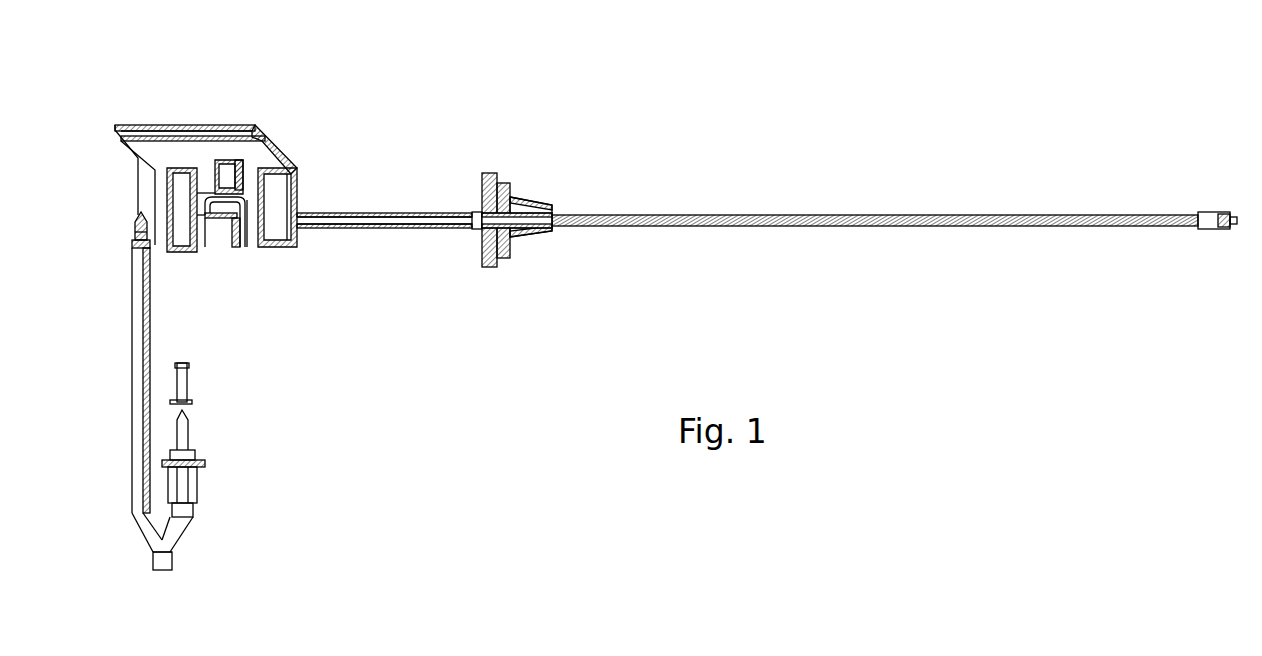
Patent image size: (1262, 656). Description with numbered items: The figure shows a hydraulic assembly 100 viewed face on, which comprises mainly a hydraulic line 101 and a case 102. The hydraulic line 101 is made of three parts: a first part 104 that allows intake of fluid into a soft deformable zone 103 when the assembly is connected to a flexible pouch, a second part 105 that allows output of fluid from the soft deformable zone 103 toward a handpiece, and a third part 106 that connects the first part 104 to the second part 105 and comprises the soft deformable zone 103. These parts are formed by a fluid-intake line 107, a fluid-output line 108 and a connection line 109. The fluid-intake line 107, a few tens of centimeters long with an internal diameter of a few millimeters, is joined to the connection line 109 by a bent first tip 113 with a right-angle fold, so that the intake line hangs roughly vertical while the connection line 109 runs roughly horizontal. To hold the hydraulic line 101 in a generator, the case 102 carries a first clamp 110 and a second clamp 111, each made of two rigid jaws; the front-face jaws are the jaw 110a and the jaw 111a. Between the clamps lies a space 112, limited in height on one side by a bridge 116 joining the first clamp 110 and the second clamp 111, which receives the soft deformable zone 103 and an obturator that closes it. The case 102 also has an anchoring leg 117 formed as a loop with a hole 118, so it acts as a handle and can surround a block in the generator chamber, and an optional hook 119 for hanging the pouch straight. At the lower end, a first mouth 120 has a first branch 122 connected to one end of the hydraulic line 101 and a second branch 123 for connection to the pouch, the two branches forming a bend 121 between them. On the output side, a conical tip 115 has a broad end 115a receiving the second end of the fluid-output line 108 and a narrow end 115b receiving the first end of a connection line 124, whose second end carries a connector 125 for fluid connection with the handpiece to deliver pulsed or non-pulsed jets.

The hydraulic assembly 100 is at (410, 442).
The hydraulic line 101 is at (413, 203).
The case 102 is at (240, 138).
The soft deformable zone 103 is at (233, 253).
The first part 104 is at (131, 357).
The second part 105 is at (358, 230).
The third part 106 is at (199, 215).
The fluid-intake line 107 is at (143, 405).
The fluid-output line 108 is at (330, 213).
The connection line 109 is at (244, 190).
The first clamp 110 is at (183, 253).
The jaw 110a is at (197, 243).
The second clamp 111 is at (282, 256).
The jaw 111a is at (287, 257).
The space 112 is at (222, 258).
The first tip 113 is at (135, 227).
The conical tip 115 is at (530, 198).
The broad end 115a is at (480, 250).
The narrow end 115b is at (555, 208).
The bridge 116 is at (203, 193).
The anchoring leg 117 is at (172, 122).
The hole 118 is at (196, 128).
The hook 119 is at (238, 158).
The first mouth 120 is at (184, 541).
The bend 121 is at (160, 570).
The first branch 122 is at (150, 528).
The second branch 123 is at (190, 520).
The connection line 124 is at (848, 212).
The connector 125 is at (1220, 208).